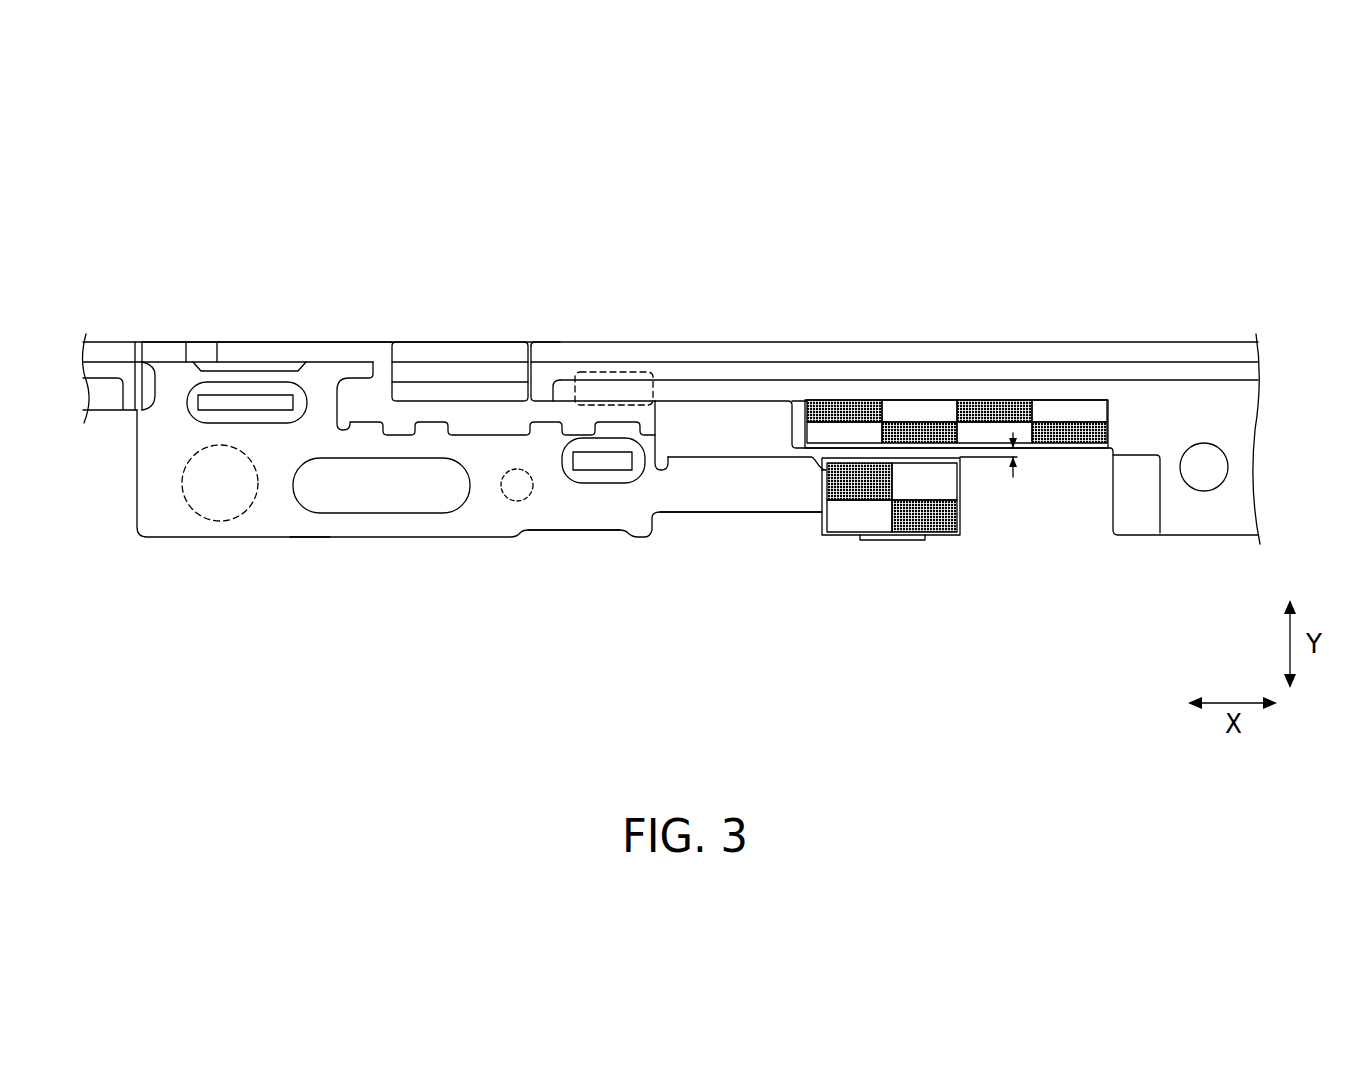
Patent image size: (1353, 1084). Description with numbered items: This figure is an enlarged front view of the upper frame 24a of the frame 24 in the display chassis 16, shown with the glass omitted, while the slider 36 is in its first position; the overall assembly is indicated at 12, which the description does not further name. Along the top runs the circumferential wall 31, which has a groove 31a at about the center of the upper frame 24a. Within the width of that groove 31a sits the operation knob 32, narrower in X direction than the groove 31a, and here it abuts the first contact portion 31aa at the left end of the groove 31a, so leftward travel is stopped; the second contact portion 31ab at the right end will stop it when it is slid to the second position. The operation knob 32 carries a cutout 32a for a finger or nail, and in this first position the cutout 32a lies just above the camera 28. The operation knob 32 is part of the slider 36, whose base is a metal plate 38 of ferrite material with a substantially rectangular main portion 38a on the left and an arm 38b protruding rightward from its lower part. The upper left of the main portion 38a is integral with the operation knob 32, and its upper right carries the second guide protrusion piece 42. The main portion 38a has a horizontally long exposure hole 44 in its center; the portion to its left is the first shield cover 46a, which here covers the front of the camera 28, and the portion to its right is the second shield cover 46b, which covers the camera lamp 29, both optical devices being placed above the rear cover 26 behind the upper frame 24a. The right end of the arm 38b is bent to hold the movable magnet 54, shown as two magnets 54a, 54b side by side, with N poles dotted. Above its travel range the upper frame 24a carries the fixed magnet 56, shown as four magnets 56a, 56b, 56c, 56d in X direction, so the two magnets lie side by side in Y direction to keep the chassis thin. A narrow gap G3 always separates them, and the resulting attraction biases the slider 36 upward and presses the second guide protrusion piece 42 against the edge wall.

The linear motion unit 12 is at (677, 287).
The display chassis 16 is at (1018, 212).
The frame 24 is at (1165, 342).
The upper frame 24a is at (1184, 489).
The rear cover 26 is at (733, 417).
The camera 28 is at (207, 520).
The camera lamp 29 is at (513, 501).
The circumferential wall 31 is at (620, 353).
The groove 31a is at (426, 354).
The first contact portion 31aa is at (150, 368).
The second contact portion 31ab is at (527, 347).
The operation knob 32 is at (332, 350).
The cutout 32a is at (218, 350).
The slider 36 is at (611, 513).
The metal plate 38 is at (271, 522).
The main portion 38a is at (308, 522).
The arm 38b is at (733, 493).
The second guide protrusion piece 42 is at (592, 387).
The exposure hole 44 is at (368, 505).
The first shield cover 46a is at (156, 500).
The second shield cover 46b is at (546, 502).
The movable magnet 54 is at (851, 536).
The magnet 54a is at (841, 520).
The magnet 54b is at (947, 520).
The fixed magnet 56 is at (968, 400).
The magnet 56a is at (858, 400).
The magnet 56b is at (937, 400).
The magnet 56c is at (1012, 400).
The magnet 56d is at (1088, 400).
The gap G3 is at (1008, 461).